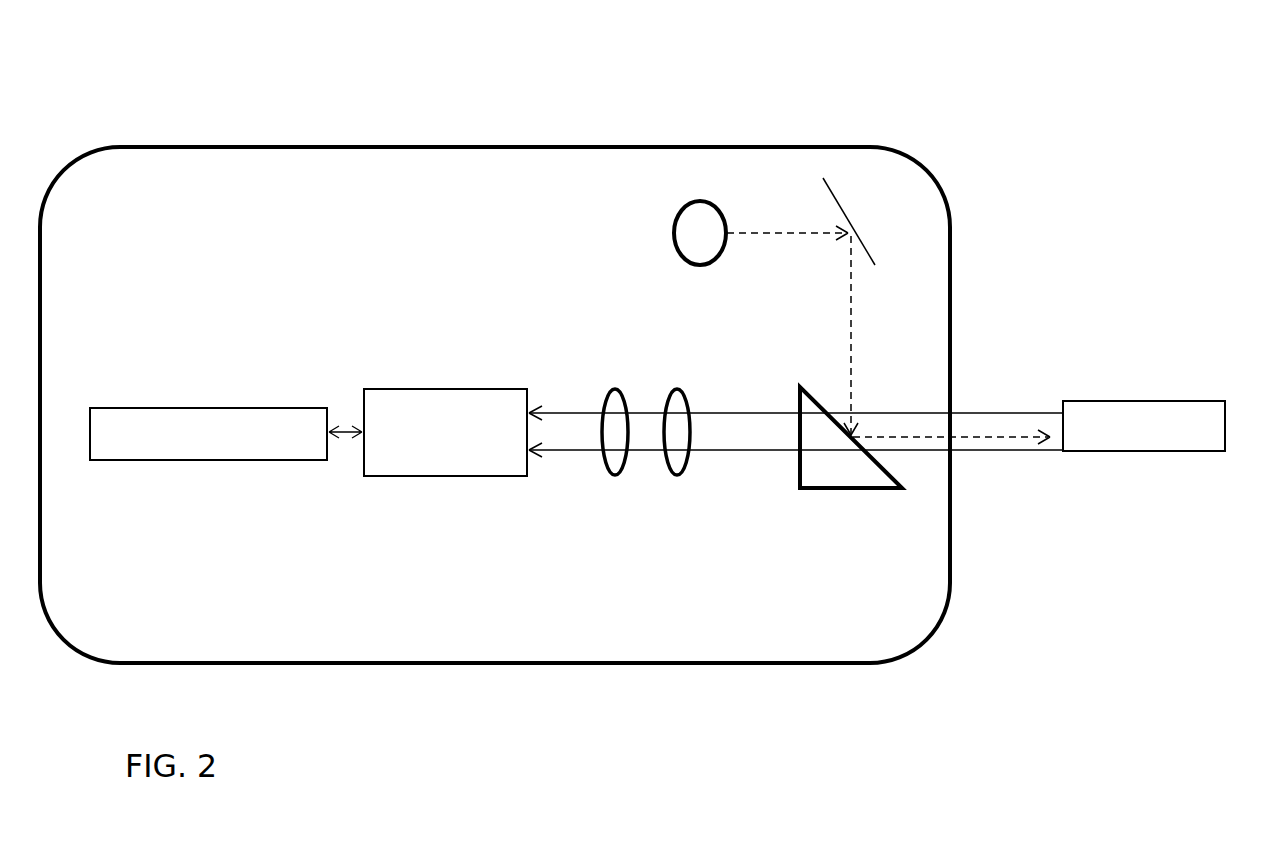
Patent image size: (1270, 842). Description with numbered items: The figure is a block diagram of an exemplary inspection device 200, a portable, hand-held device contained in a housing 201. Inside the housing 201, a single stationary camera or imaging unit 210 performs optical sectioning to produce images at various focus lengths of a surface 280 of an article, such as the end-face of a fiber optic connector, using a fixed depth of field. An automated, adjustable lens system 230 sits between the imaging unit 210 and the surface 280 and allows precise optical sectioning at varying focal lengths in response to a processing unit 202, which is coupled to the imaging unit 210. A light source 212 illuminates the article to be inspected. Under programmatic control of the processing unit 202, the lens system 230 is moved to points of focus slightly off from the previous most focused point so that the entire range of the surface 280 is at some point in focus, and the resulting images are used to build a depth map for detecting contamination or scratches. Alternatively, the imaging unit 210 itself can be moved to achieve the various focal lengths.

The inspection device 200 is at (320, 110).
The housing 201 is at (800, 145).
The processing unit 202 is at (235, 462).
The imaging unit 210 is at (482, 478).
The light source 212 is at (680, 215).
The lens system 230 is at (685, 483).
The surface 280 is at (1062, 437).